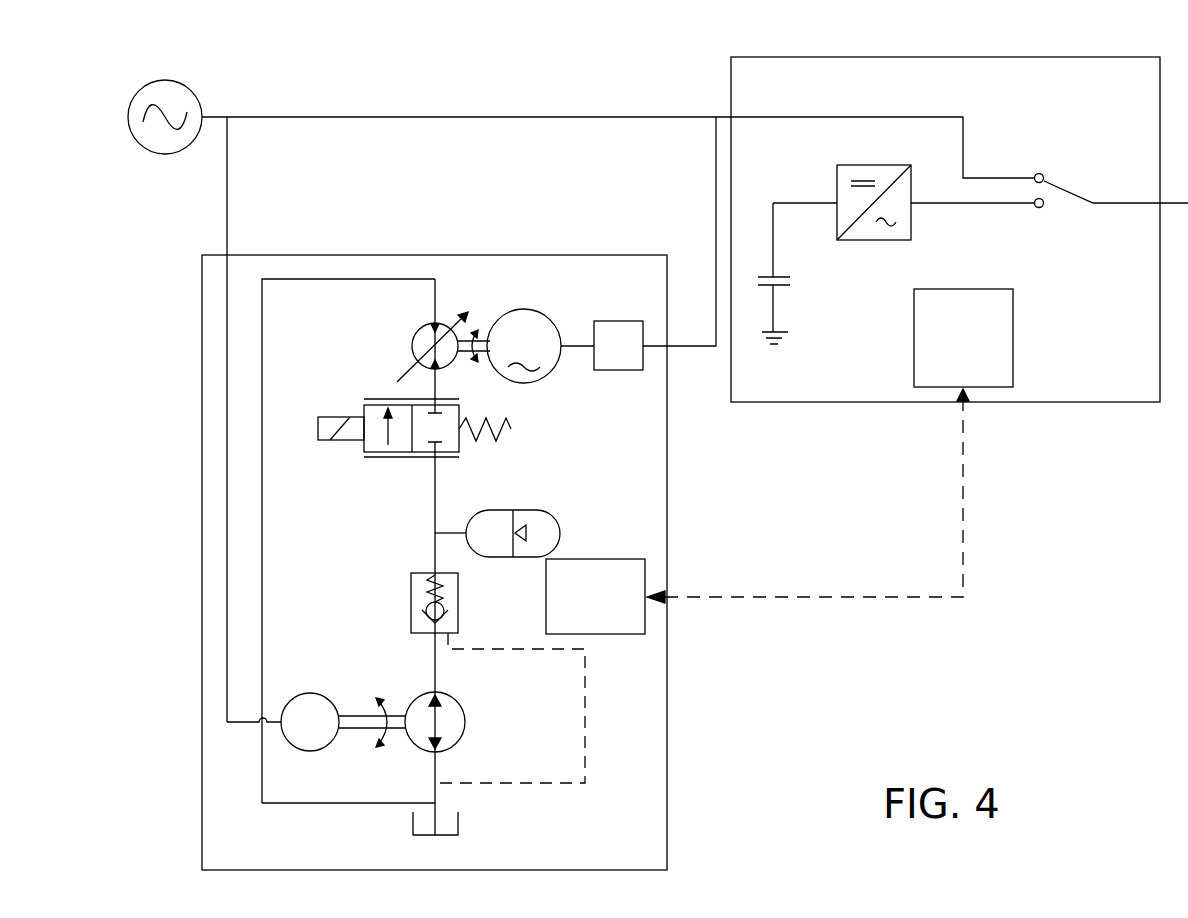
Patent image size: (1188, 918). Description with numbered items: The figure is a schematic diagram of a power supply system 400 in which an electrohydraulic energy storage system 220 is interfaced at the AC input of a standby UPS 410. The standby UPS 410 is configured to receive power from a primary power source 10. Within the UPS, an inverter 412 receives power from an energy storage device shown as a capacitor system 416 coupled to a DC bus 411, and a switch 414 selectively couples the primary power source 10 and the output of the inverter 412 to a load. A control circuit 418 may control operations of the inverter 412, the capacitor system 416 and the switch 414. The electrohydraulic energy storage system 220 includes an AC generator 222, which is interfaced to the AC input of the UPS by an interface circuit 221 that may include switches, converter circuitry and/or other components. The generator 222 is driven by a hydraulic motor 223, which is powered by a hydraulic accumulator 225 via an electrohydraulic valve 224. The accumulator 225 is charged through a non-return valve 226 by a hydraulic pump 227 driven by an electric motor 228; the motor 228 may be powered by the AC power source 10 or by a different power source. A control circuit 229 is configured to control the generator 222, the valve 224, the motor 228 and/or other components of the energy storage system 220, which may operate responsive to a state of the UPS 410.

The primary power source 10 is at (165, 80).
The electrohydraulic energy storage system 220 is at (435, 255).
The interface circuit 221 is at (618, 321).
The AC generator 222 is at (524, 309).
The hydraulic motor 223 is at (412, 345).
The electrohydraulic valve 224 is at (318, 428).
The hydraulic accumulator 225 is at (522, 510).
The non-return valve 226 is at (411, 606).
The hydraulic pump 227 is at (465, 722).
The electric motor 228 is at (310, 693).
The control circuit 229 is at (596, 559).
The power supply system 400 is at (892, 645).
The standby UPS 410 is at (945, 57).
The DC bus 411 is at (816, 203).
The inverter 412 is at (880, 240).
The switch 414 is at (1068, 226).
The capacitor system 416 is at (812, 296).
The control circuit 418 is at (1013, 337).